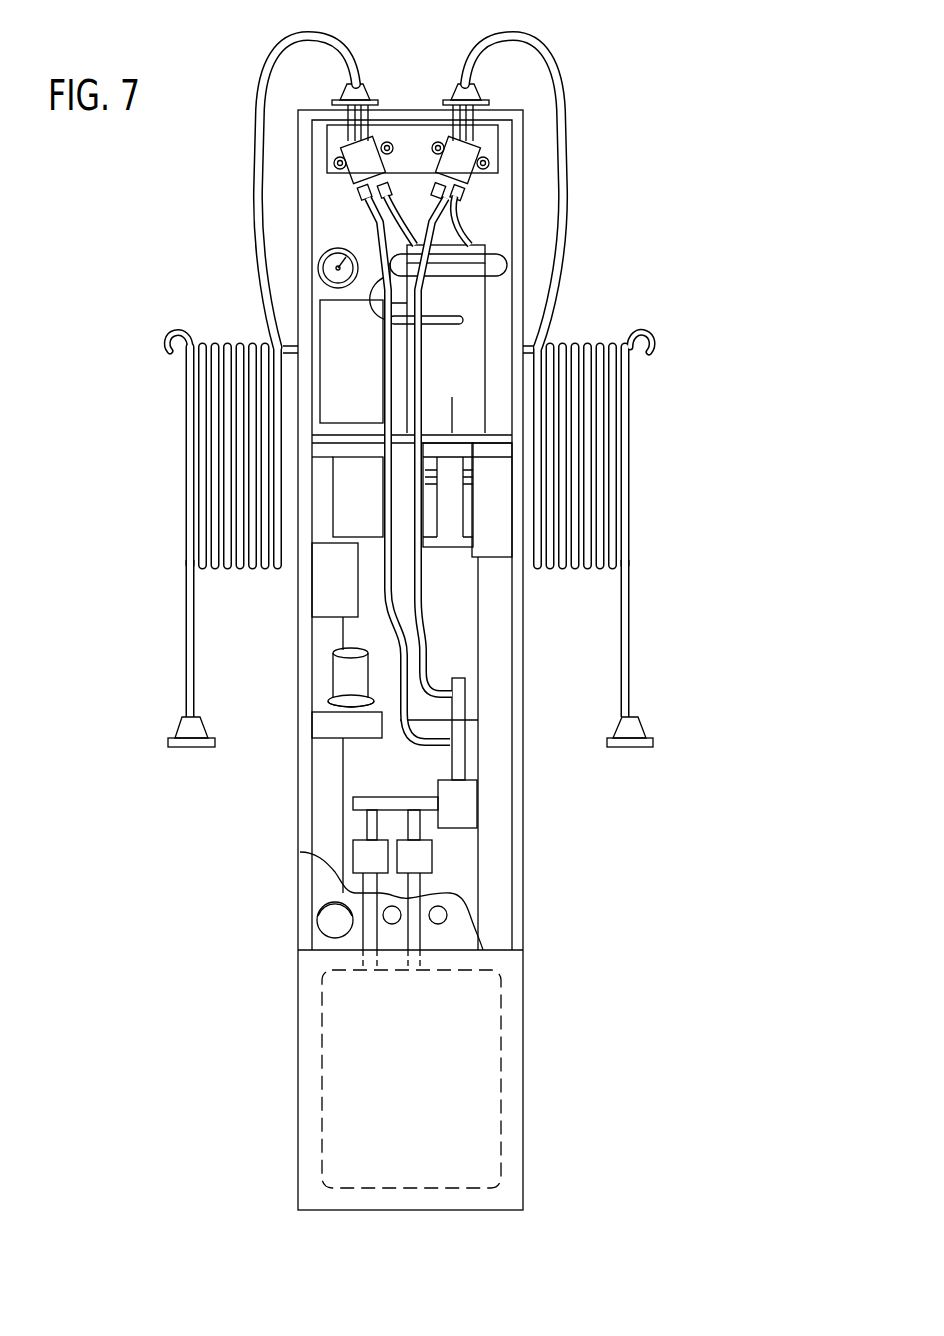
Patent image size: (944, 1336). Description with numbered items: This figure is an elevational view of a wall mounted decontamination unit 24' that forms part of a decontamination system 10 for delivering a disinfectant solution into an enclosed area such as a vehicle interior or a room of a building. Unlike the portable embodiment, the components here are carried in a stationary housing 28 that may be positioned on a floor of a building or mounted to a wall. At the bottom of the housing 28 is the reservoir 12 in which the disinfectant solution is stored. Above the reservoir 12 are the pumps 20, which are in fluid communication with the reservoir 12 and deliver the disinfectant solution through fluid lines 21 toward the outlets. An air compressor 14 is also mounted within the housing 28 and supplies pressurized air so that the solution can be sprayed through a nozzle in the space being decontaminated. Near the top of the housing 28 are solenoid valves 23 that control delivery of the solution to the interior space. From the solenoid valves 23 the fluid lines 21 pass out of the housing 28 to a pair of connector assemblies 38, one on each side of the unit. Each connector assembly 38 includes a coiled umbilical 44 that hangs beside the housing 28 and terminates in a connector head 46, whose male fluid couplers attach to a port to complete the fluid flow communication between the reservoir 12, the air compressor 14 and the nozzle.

The decontamination system 10 is at (712, 165).
The reservoir 12 is at (500, 1030).
The air compressor 14 is at (340, 330).
The pumps 20 is at (372, 862).
The fluid lines 21 is at (432, 632).
The solenoid valves 23 is at (363, 163).
The decontamination unit 24' is at (324, 901).
The housing 28 is at (298, 773).
The connector assembly 38 is at (662, 430).
The umbilical 44 is at (187, 470).
The connector head 46 is at (182, 727).